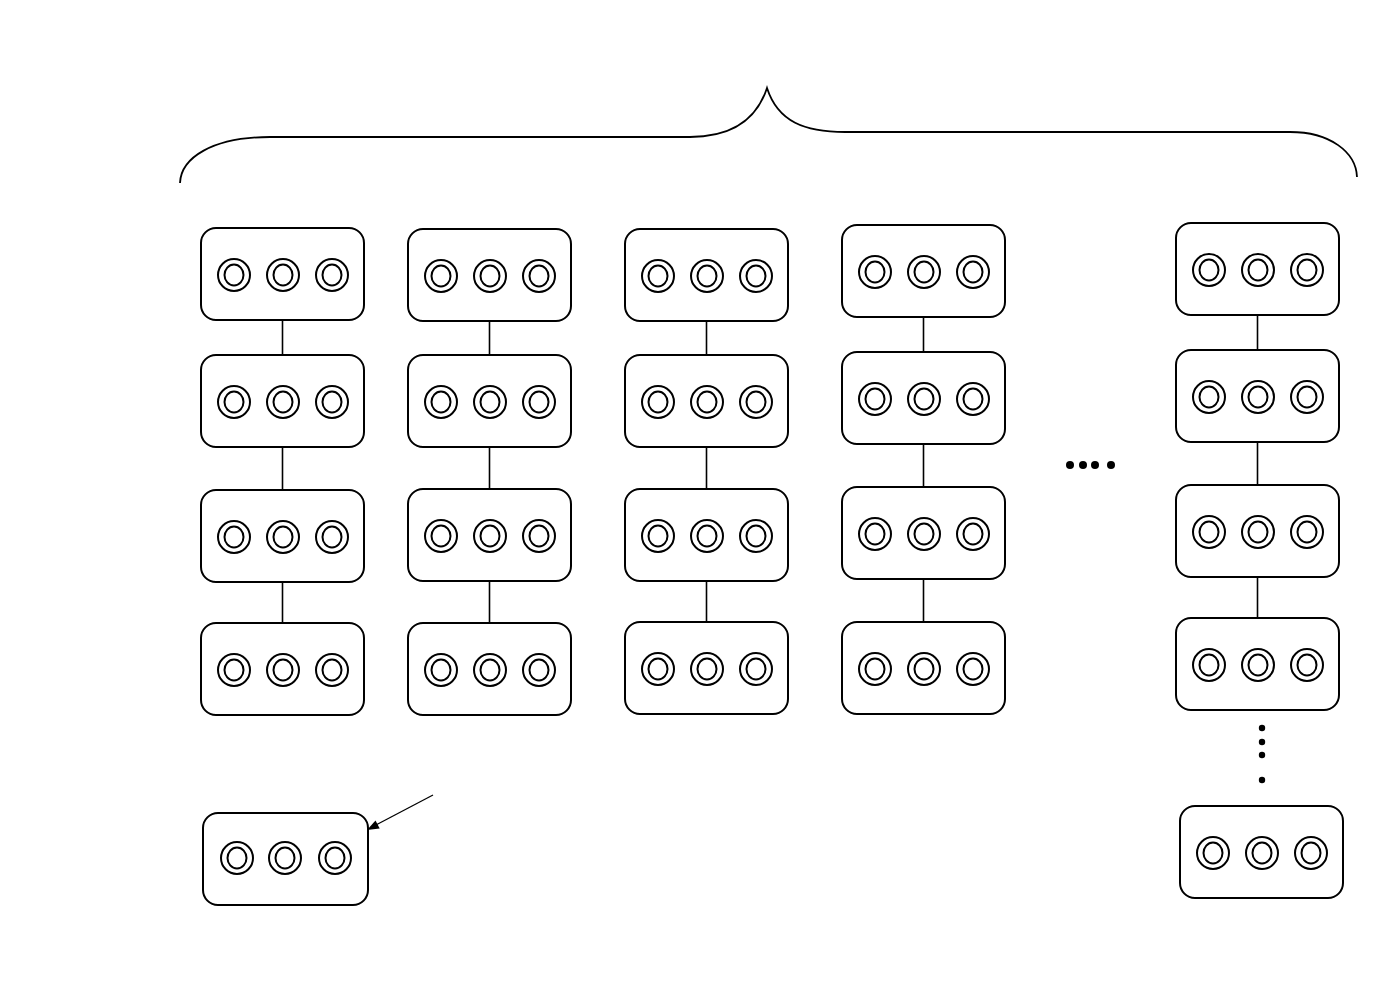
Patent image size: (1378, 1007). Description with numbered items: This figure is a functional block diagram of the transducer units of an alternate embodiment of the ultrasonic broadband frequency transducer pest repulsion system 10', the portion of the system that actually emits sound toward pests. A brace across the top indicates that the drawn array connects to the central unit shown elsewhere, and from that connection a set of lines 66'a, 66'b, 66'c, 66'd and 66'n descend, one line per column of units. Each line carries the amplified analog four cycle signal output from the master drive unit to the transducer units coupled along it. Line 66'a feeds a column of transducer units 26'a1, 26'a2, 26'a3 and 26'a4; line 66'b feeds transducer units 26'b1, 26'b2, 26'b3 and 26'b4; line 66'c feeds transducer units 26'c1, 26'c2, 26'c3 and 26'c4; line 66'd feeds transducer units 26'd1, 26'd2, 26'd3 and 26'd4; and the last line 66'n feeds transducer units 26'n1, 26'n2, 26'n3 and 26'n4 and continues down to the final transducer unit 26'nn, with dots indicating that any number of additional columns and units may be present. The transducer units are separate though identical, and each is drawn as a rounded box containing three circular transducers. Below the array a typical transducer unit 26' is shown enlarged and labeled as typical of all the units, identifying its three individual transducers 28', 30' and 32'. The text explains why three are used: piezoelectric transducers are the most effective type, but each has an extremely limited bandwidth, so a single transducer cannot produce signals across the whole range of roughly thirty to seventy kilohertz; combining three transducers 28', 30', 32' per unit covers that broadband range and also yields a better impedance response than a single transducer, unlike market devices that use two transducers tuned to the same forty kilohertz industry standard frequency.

The ultrasonic broadband frequency transducer pest repulsion system 10' is at (768, 473).
The line 66'a is at (282, 443).
The line 66'b is at (489, 443).
The line 66'c is at (706, 442).
The line 66'd is at (923, 441).
The line 66'n is at (1259, 533).
The transducer unit 26'a1 is at (282, 274).
The transducer unit 26'a2 is at (282, 401).
The transducer unit 26'a3 is at (282, 536).
The transducer unit 26'a4 is at (282, 669).
The transducer unit 26'b1 is at (489, 275).
The transducer unit 26'b2 is at (489, 401).
The transducer unit 26'b3 is at (489, 535).
The transducer unit 26'b4 is at (489, 669).
The transducer unit 26'c1 is at (706, 275).
The transducer unit 26'c2 is at (706, 401).
The transducer unit 26'c3 is at (706, 535).
The transducer unit 26'c4 is at (706, 668).
The transducer unit 26'd1 is at (923, 271).
The transducer unit 26'd2 is at (923, 398).
The transducer unit 26'd3 is at (923, 533).
The transducer unit 26'd4 is at (923, 668).
The transducer unit 26'n1 is at (1257, 269).
The transducer unit 26'n2 is at (1257, 396).
The transducer unit 26'n3 is at (1257, 531).
The transducer unit 26'n4 is at (1257, 664).
The transducer unit 26'nn is at (1261, 852).
The typical transducer unit 26' is at (472, 833).
The transducer 28' is at (217, 821).
The transducer 30' is at (280, 813).
The transducer 32' is at (349, 813).